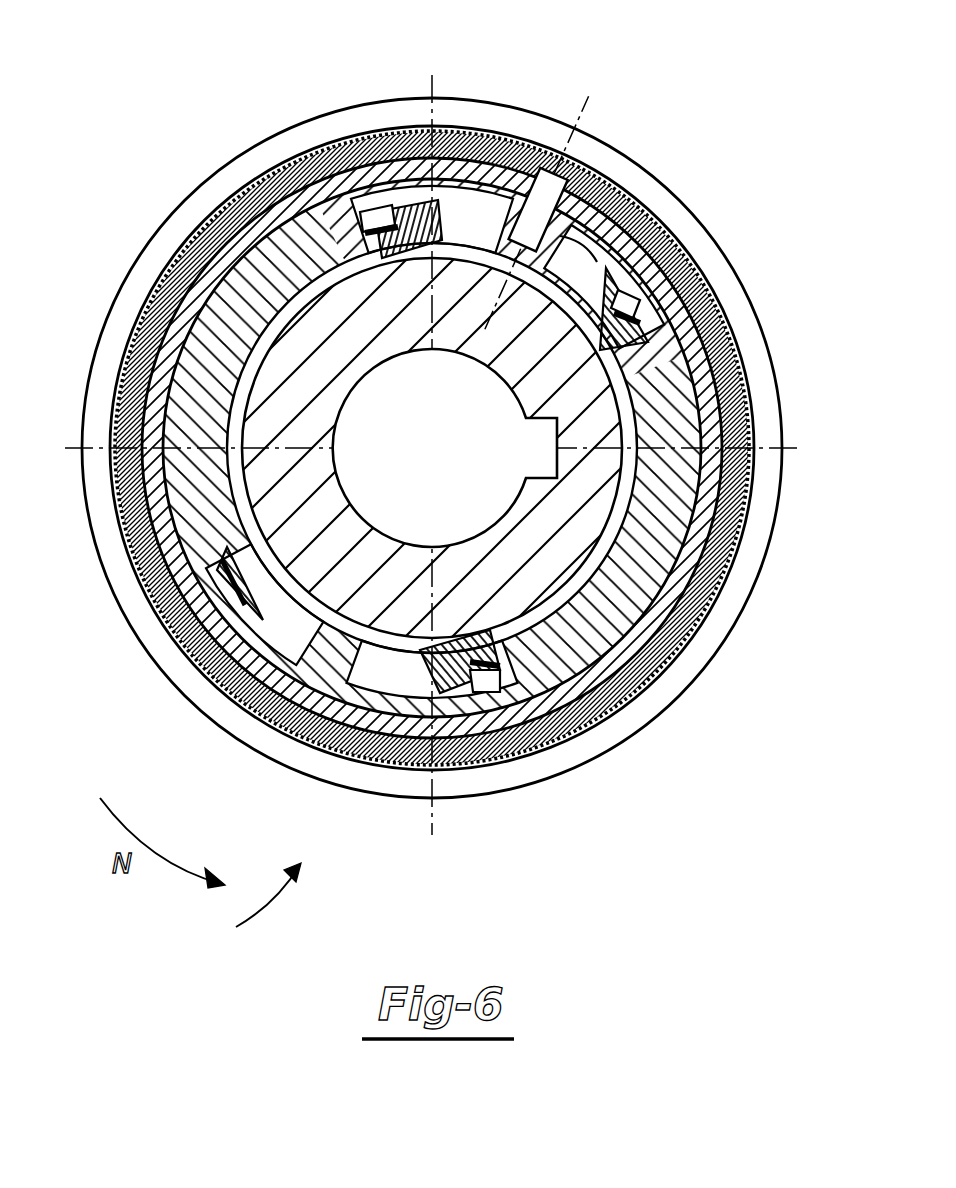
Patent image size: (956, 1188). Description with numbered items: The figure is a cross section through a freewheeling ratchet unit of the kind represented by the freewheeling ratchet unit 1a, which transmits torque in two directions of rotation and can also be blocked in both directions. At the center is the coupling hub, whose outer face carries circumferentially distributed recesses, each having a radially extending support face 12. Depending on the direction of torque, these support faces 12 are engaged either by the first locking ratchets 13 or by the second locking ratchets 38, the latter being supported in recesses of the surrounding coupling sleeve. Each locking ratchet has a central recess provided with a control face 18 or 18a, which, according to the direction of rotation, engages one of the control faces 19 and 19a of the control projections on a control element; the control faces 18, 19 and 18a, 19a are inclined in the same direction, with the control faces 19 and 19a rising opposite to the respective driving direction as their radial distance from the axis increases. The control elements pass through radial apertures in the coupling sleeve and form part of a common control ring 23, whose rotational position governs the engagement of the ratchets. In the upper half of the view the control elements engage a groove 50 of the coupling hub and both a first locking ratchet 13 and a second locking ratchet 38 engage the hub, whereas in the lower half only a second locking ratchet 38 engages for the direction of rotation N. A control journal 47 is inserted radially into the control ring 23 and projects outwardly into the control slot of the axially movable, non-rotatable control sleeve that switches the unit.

The support face 12 is at (548, 420).
The first locking ratchet 13 is at (623, 288).
The control face 18 is at (628, 238).
The control face 18a is at (457, 195).
The control face 19 is at (625, 230).
The control face 19a is at (473, 196).
The control ring 23 is at (598, 181).
The second locking ratchet 38 is at (293, 175).
The control journal 47 is at (552, 173).
The groove 50 is at (175, 267).
The freewheeling ratchet unit 1a is at (249, 914).